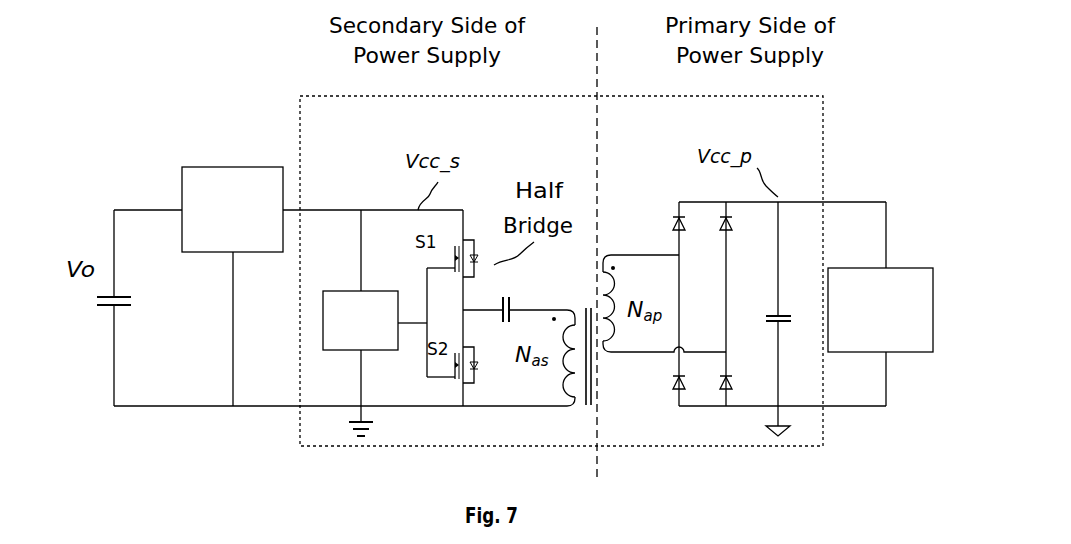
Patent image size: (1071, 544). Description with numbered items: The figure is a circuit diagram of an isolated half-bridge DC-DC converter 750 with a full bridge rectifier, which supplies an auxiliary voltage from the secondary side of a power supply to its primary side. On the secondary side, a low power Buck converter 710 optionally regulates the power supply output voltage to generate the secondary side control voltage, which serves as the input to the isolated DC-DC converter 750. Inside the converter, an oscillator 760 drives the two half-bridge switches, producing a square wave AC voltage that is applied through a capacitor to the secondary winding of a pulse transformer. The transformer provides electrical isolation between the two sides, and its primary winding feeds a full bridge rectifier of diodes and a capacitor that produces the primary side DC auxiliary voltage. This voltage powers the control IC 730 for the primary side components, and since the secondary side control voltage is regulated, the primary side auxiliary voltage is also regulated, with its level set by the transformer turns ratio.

The Buck converter 710 is at (181, 188).
The isolated DC-DC converter 750 is at (298, 128).
The oscillator 760 is at (333, 286).
The control IC 730 is at (912, 266).